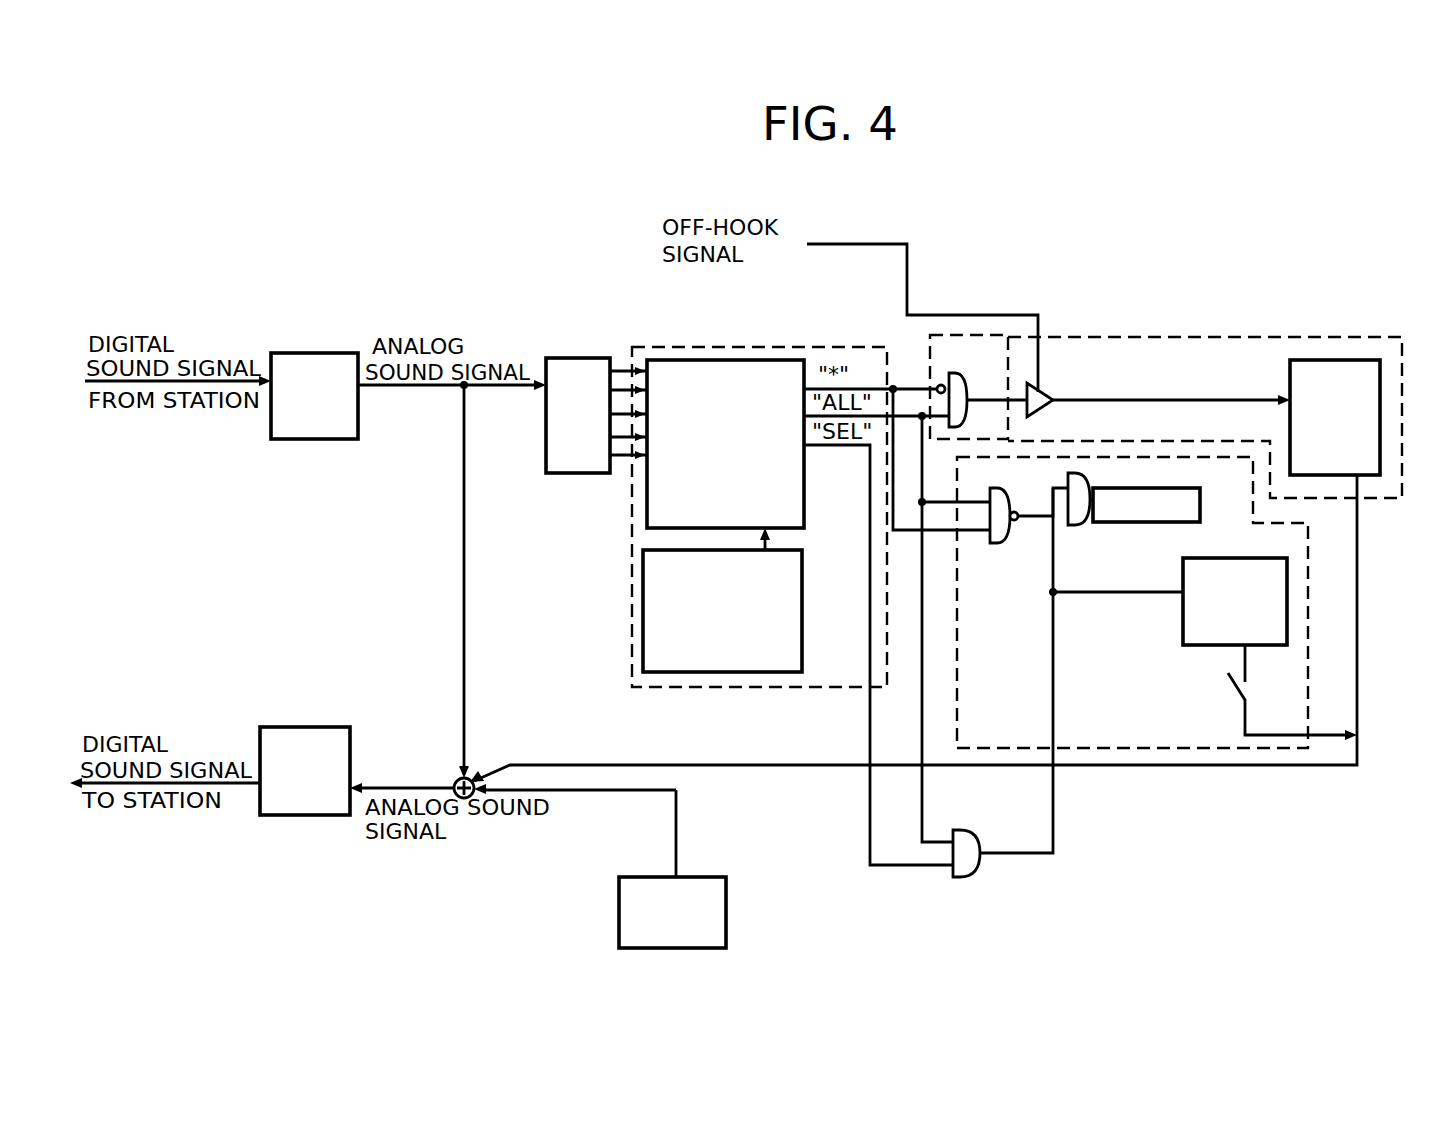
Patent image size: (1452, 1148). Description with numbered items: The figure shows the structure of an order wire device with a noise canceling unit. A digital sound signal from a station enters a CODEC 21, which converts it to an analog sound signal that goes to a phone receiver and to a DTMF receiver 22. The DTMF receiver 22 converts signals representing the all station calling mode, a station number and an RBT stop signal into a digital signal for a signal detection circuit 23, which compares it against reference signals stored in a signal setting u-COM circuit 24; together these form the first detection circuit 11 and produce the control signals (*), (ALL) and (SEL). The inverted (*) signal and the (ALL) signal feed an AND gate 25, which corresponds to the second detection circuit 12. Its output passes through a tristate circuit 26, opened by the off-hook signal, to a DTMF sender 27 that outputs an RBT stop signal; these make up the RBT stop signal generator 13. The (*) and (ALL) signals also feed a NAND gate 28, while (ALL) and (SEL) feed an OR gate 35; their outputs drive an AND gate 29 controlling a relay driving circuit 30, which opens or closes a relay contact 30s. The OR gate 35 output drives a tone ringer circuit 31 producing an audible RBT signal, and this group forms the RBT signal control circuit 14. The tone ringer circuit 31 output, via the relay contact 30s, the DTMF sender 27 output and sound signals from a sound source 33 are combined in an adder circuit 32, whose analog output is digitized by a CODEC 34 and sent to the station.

The first detection circuit 11 is at (782, 346).
The second detection circuit 12 is at (927, 352).
The RBT stop signal generator 13 is at (1230, 337).
The RBT signal control circuit 14 is at (1312, 658).
The CODEC 21 is at (327, 353).
The DTMF receiver 22 is at (587, 356).
The signal detection circuit 23 is at (645, 511).
The signal setting u-COM circuit 24 is at (643, 641).
The AND gate 25 is at (966, 388).
The tristate circuit 26 is at (1045, 392).
The DTMF sender 27 is at (1290, 381).
The NAND gate 28 is at (1008, 547).
The AND gate 29 is at (1078, 527).
The relay driving circuit 30 is at (1202, 506).
The relay contact 30s is at (1229, 688).
The tone ringer circuit 31 is at (1228, 558).
The adder circuit 32 is at (451, 779).
The sound source 33 is at (727, 930).
The CODEC 34 is at (338, 727).
The OR gate 35 is at (970, 878).